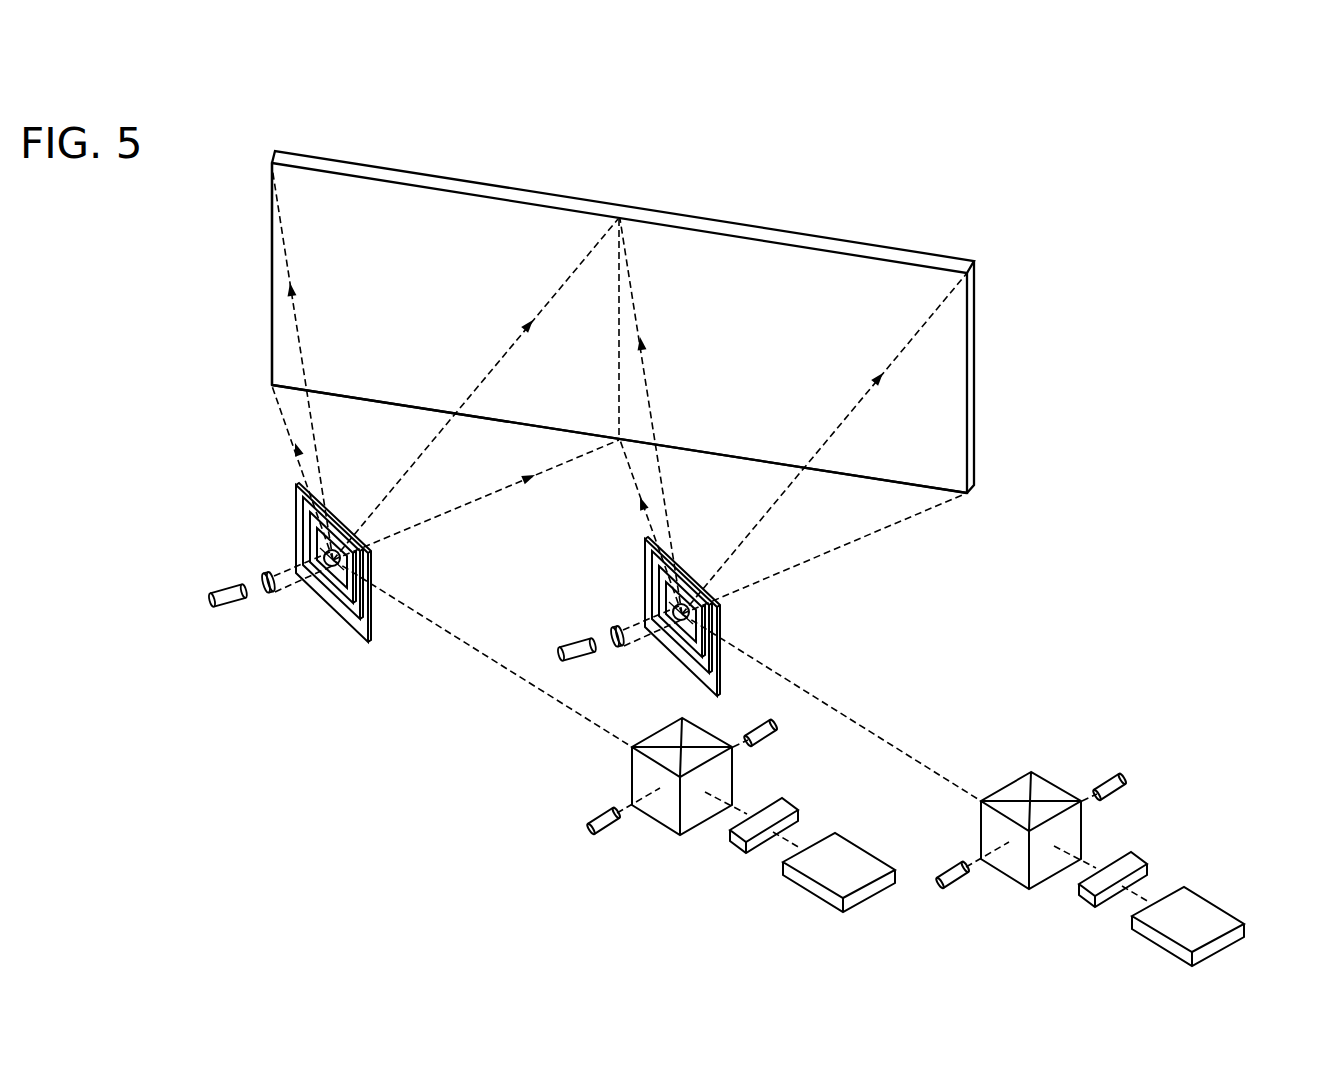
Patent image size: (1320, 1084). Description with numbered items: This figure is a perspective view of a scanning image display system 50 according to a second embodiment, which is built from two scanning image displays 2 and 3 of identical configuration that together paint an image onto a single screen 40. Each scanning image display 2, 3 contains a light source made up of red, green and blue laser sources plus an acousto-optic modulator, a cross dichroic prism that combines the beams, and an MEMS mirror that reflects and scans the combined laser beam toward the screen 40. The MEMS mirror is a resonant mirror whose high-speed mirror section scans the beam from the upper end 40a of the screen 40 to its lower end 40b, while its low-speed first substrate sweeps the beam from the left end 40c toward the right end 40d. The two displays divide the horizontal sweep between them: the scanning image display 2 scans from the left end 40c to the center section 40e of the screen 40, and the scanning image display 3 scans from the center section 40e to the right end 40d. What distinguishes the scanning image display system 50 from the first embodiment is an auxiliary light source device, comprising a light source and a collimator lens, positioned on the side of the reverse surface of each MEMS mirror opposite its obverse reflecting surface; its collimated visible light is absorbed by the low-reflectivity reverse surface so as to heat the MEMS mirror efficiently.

The scanning image display 2 is at (505, 745).
The scanning image display 3 is at (935, 697).
The screen 40 is at (975, 373).
The upper end 40a is at (488, 188).
The lower end 40b is at (488, 420).
The left end 40c is at (272, 278).
The right end 40d is at (975, 430).
The center section 40e is at (620, 277).
The scanning image display system 50 is at (1078, 176).